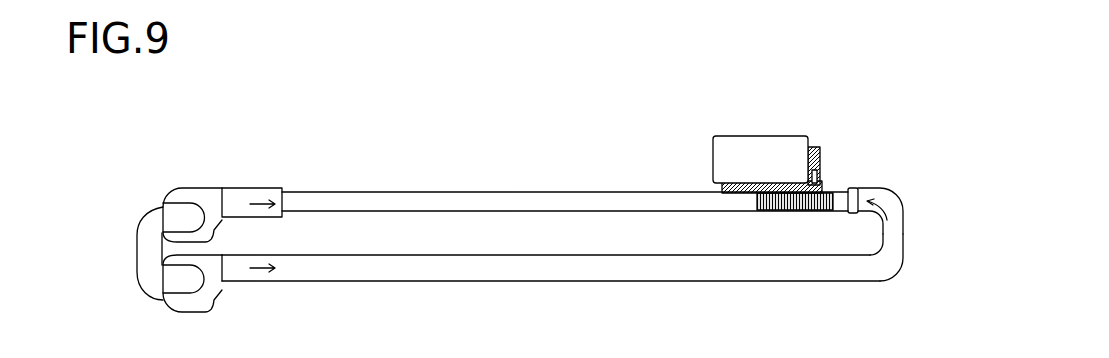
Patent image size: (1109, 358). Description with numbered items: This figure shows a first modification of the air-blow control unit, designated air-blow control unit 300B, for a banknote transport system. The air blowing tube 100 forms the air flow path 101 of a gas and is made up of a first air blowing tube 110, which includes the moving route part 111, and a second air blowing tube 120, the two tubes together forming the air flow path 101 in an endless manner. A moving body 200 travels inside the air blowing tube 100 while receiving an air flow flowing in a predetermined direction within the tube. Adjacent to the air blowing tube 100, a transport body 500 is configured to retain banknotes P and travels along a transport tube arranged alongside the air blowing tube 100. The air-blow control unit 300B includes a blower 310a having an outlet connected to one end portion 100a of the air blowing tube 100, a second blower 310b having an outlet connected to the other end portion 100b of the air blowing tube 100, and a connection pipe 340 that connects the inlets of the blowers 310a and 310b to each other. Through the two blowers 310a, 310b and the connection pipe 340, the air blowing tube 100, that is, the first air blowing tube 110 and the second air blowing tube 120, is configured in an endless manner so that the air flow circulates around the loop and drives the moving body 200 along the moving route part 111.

The air-blow control unit 300B is at (131, 157).
The connection pipe 340 is at (137, 252).
The blower 310a is at (209, 177).
The blower 310b is at (209, 316).
The air blowing tube 100 is at (948, 183).
The one end portion of the air blowing tube 100a is at (245, 221).
The other end portion of the air blowing tube 100b is at (245, 254).
The moving route part 111 is at (522, 192).
The air flow path 101 is at (518, 281).
The first air blowing tube 110 is at (910, 188).
The second air blowing tube 120 is at (910, 252).
The moving body 200 is at (754, 199).
The transport body 500 is at (824, 153).
The banknote P is at (762, 134).